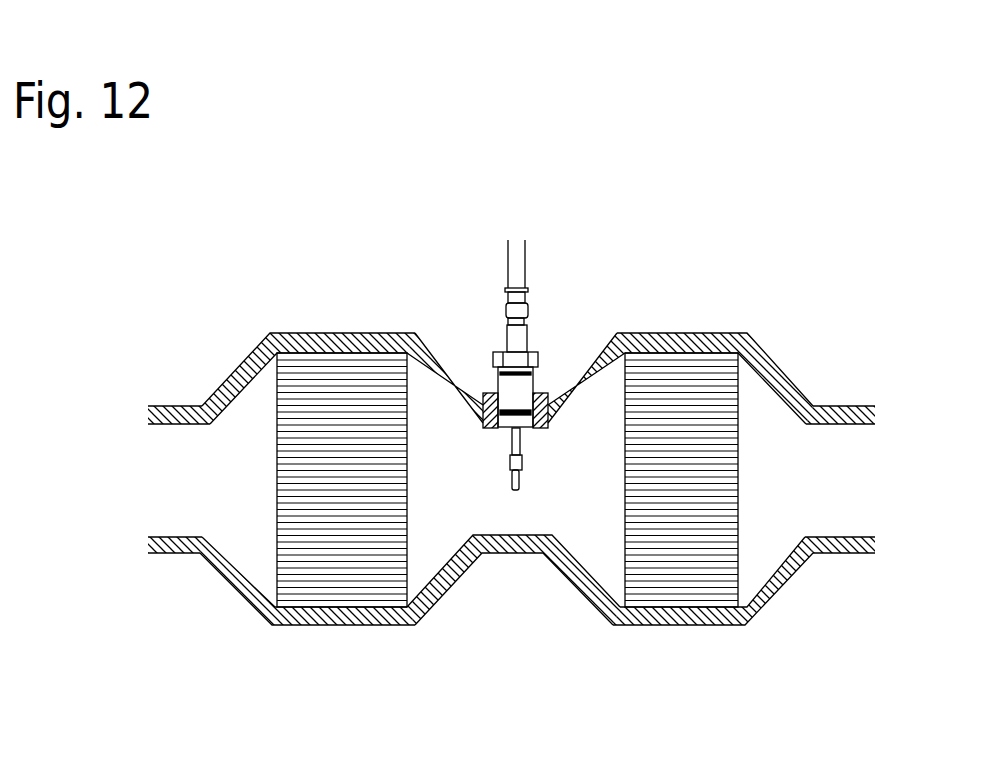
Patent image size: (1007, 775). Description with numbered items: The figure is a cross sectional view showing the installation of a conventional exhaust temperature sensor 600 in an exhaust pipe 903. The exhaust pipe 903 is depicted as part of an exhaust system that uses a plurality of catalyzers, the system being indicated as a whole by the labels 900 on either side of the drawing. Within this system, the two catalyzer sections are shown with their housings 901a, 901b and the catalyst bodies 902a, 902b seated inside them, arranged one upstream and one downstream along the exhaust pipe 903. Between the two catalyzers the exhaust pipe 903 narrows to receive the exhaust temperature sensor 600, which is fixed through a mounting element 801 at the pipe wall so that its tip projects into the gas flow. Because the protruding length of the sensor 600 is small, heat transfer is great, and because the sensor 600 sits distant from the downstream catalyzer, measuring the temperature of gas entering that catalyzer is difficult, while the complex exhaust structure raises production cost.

The catalytic converter unit 900 is at (323, 292).
The first catalyst housing 901a is at (228, 573).
The second catalyst housing 901b is at (785, 577).
The first catalyst carrier 902a is at (337, 570).
The second catalyst carrier 902b is at (672, 570).
The exhaust pipe 903 is at (158, 407).
The exhaust temperature sensor 600 is at (520, 342).
The sensor mounting boss 801 is at (548, 392).